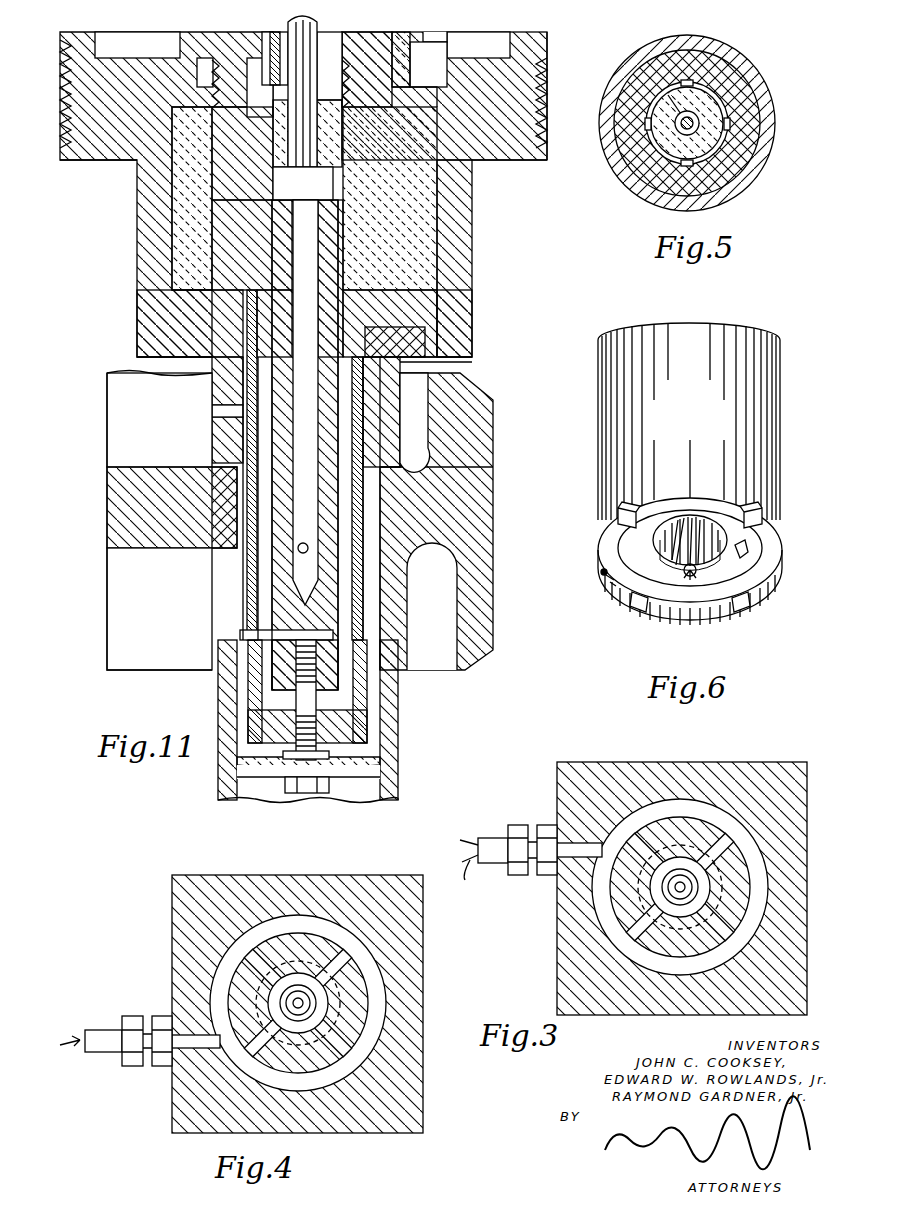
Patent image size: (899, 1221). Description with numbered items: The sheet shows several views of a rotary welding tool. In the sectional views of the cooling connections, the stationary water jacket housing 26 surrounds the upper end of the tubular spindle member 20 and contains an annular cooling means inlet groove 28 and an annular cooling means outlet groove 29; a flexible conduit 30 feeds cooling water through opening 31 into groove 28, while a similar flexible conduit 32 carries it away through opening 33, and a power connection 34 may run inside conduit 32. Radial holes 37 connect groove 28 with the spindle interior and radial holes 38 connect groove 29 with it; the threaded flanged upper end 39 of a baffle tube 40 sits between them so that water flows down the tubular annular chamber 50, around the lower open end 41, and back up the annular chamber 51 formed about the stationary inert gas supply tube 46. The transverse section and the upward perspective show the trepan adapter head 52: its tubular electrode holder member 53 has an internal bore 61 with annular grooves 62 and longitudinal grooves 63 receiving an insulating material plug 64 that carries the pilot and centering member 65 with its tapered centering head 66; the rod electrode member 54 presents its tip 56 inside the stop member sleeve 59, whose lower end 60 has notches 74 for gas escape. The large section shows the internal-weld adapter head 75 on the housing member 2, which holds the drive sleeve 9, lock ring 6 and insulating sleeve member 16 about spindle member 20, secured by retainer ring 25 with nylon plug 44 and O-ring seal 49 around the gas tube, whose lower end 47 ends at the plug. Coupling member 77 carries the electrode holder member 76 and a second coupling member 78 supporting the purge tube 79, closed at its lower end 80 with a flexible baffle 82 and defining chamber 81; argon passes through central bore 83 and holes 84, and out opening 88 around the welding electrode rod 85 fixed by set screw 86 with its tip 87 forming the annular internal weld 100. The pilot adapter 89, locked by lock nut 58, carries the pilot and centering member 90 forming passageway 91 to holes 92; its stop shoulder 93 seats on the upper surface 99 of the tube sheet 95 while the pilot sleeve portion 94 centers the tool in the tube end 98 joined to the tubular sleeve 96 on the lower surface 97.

In FIG. 11, the housing member 2 is at (550, 53).
In FIG. 11, the lock ring 6 is at (512, 43).
In FIG. 11, the drive sleeve 9 is at (447, 38).
In FIG. 11, the insulating sleeve member 16 is at (412, 38).
In FIG. 11, the spindle member 20 is at (372, 93).
In FIG. 11, the retainer ring 25 is at (200, 80).
In FIG. 3, the water jacket housing 26 is at (645, 998).
In FIG. 4, the water jacket housing 26 is at (415, 991).
In FIG. 4, the cooling means inlet groove 28 is at (375, 1069).
In FIG. 3, the cooling means outlet groove 29 is at (742, 812).
In FIG. 4, the flexible conduit 30 is at (102, 1053).
In FIG. 4, the opening 31 is at (190, 1066).
In FIG. 3, the flexible conduit 32 is at (490, 839).
In FIG. 3, the opening 33 is at (570, 839).
In FIG. 3, the power connection 34 is at (465, 856).
In FIG. 4, the radial holes 37 is at (328, 958).
In FIG. 3, the radial holes 38 is at (650, 832).
In FIG. 3, the threaded flanged upper end 39 is at (655, 896).
In FIG. 11, the baffle tube 40 is at (272, 44).
In FIG. 4, the baffle tube 40 is at (320, 1000).
In FIG. 11, the lower open end 41 is at (283, 86).
In FIG. 11, the nylon plug 44 is at (345, 135).
In FIG. 11, the inert gas supply tube 46 is at (290, 24).
In FIG. 3, the inert gas supply tube 46 is at (682, 900).
In FIG. 4, the inert gas supply tube 46 is at (290, 1004).
In FIG. 11, the lower end of argon supply tube 47 is at (306, 168).
In FIG. 11, the O-ring seal 49 is at (283, 133).
In FIG. 11, the tubular annular chamber 50 is at (340, 38).
In FIG. 4, the tubular annular chamber 50 is at (296, 971).
In FIG. 11, the annular chamber 51 is at (323, 58).
In FIG. 3, the annular chamber 51 is at (660, 883).
In FIG. 4, the annular chamber 51 is at (275, 994).
In FIG. 6, the adapter head 52 is at (586, 414).
In FIG. 5, the electrode holder member 53 is at (745, 144).
In FIG. 6, the electrode holder member 53 is at (705, 582).
In FIG. 6, the rod electrode member 54 is at (748, 550).
In FIG. 6, the tip 56 is at (760, 566).
In FIG. 11, the lock nut 58 is at (62, 152).
In FIG. 5, the stop member sleeve 59 is at (768, 109).
In FIG. 6, the stop member sleeve 59 is at (770, 441).
In FIG. 6, the lower end of stop member 60 is at (603, 573).
In FIG. 5, the internal bore 61 is at (720, 96).
In FIG. 6, the internal bore 61 is at (652, 548).
In FIG. 5, the annular grooves 62 is at (665, 163).
In FIG. 5, the longitudinal grooves 63 is at (692, 80).
In FIG. 5, the insulating material plug 64 is at (668, 96).
In FIG. 5, the pilot and centering member 65 is at (678, 132).
In FIG. 6, the centering head 66 is at (680, 572).
In FIG. 6, the notches 74 is at (620, 516).
In FIG. 11, the adapter head 75 is at (494, 278).
In FIG. 11, the electrode holder member 76 is at (415, 346).
In FIG. 11, the coupling member 77 is at (378, 190).
In FIG. 11, the coupling member 78 is at (420, 238).
In FIG. 11, the purge tube 79 is at (403, 363).
In FIG. 11, the lower end of purge tube 80 is at (345, 726).
In FIG. 11, the chamber 81 is at (347, 676).
In FIG. 11, the flexible baffle 82 is at (382, 762).
In FIG. 11, the central bore 83 is at (300, 258).
In FIG. 11, the holes 84 is at (283, 546).
In FIG. 11, the welding electrode rod 85 is at (285, 651).
In FIG. 11, the set screw 86 is at (316, 664).
In FIG. 11, the tip 87 is at (238, 636).
In FIG. 11, the opening 88 is at (255, 691).
In FIG. 11, the pilot adapter 89 is at (455, 300).
In FIG. 11, the pilot and centering member 90 is at (432, 438).
In FIG. 11, the passageway 91 is at (248, 453).
In FIG. 11, the holes 92 is at (215, 411).
In FIG. 11, the stop shoulder 93 is at (230, 457).
In FIG. 11, the pilot sleeve portion 94 is at (410, 528).
In FIG. 11, the tube sheet 95 is at (120, 511).
In FIG. 11, the tubular sleeve 96 is at (215, 598).
In FIG. 11, the lower surface 97 is at (135, 550).
In FIG. 11, the tube end 98 is at (392, 773).
In FIG. 11, the upper surface 99 is at (118, 463).
In FIG. 11, the annular internal weld 100 is at (396, 634).